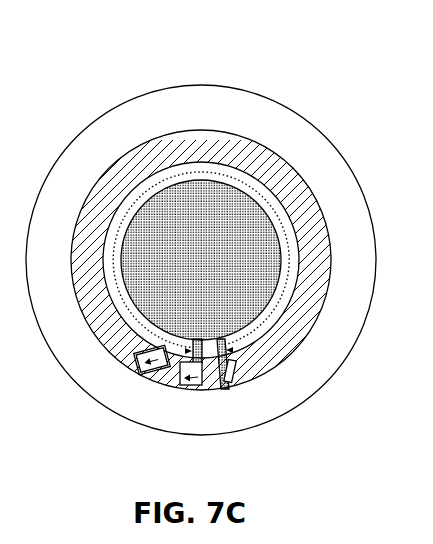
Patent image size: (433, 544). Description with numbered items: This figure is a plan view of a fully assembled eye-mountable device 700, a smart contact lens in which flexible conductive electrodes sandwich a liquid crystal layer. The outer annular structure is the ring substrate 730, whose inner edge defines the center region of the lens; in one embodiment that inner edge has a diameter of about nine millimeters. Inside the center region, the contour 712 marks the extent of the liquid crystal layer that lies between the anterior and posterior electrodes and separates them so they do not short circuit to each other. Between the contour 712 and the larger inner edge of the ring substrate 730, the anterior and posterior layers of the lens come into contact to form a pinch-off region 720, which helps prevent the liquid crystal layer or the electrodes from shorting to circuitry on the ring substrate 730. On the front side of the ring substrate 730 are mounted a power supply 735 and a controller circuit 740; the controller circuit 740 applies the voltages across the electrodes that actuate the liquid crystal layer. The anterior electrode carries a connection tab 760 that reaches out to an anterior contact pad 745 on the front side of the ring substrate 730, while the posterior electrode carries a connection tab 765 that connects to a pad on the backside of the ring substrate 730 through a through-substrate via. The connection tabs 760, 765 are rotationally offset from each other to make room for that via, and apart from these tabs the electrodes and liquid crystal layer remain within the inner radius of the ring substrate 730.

The eye-mountable device 700 is at (321, 104).
The contour of LC layer 712 is at (320, 314).
The pinch-off region 720 is at (295, 250).
The ring substrate 730 is at (89, 299).
The power supply 735 is at (139, 373).
The controller circuit 740 is at (191, 386).
The anterior contact pad 745 is at (243, 384).
The connection tab of anterior electrode 760 is at (237, 372).
The connection tab of posterior electrode 765 is at (136, 356).